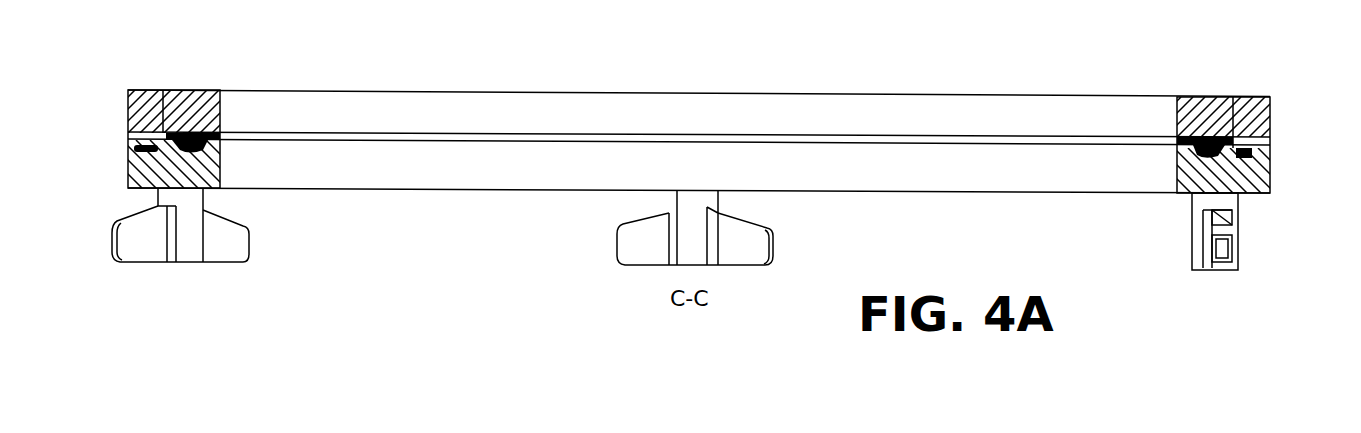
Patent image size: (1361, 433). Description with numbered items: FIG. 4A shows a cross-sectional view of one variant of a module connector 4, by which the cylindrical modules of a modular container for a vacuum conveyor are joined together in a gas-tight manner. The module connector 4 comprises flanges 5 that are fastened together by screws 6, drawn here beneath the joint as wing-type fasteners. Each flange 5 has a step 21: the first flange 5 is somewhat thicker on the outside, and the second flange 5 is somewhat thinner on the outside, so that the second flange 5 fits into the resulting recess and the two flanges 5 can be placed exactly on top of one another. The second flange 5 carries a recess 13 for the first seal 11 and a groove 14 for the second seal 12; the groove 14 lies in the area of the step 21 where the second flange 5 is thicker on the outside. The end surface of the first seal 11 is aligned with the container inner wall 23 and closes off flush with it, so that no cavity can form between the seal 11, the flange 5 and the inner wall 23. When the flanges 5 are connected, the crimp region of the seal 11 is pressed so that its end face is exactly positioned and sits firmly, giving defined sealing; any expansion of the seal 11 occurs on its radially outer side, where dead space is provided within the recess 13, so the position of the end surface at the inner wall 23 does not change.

The module connector 4 is at (1283, 102).
The flange 5 is at (129, 102).
The screw 6 is at (147, 242).
The first seal 11 is at (1205, 142).
The second seal 12 is at (1247, 160).
The recess 13 is at (197, 133).
The groove 14 is at (150, 146).
The step 21 is at (163, 90).
The container inner wall 23 is at (221, 118).